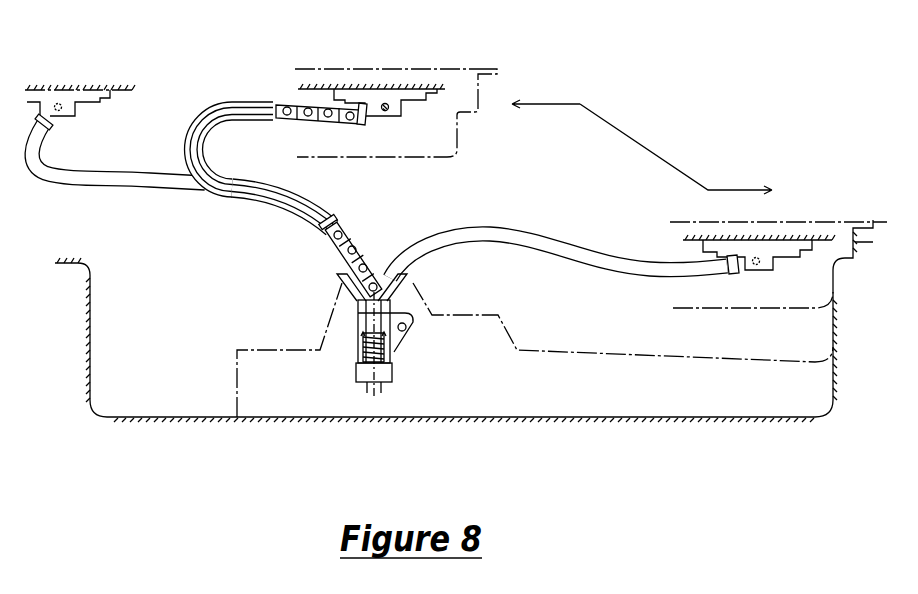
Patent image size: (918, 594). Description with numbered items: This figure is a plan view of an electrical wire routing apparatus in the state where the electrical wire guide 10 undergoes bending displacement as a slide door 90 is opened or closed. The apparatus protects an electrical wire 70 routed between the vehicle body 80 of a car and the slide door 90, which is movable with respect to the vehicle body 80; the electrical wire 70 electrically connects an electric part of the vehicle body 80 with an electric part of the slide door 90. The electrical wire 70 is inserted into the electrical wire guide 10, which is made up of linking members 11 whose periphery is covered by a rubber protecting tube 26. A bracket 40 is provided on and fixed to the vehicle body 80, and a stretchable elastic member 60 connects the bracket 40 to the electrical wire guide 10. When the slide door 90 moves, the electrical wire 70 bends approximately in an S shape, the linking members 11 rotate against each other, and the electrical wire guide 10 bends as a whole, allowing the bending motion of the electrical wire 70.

The electrical wire guide 10 is at (331, 239).
The linking members 11 is at (356, 243).
The rubber protecting tube 26 is at (316, 206).
The bracket 40 is at (389, 335).
The elastic member 60 is at (362, 355).
The electrical wire 70 is at (190, 150).
The vehicle body 80 is at (237, 391).
The slide door 90 is at (407, 70).